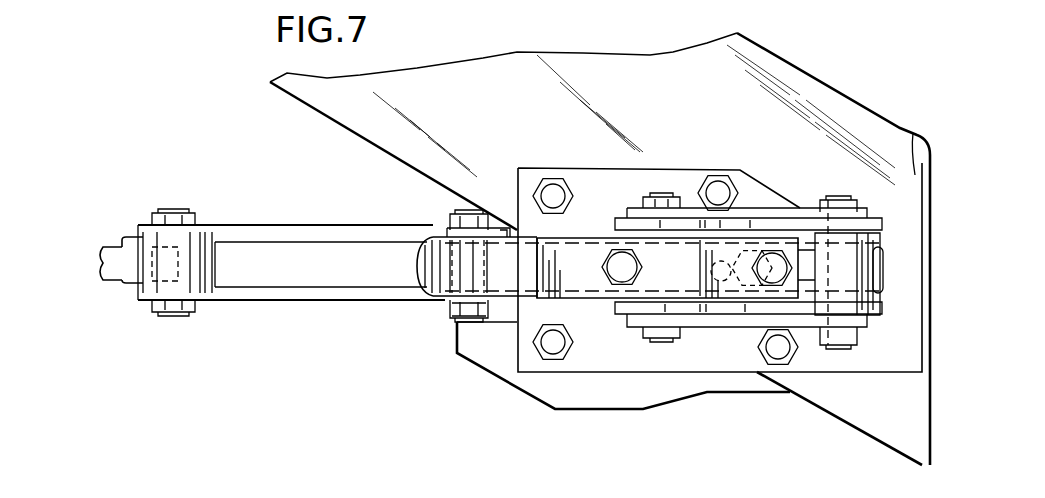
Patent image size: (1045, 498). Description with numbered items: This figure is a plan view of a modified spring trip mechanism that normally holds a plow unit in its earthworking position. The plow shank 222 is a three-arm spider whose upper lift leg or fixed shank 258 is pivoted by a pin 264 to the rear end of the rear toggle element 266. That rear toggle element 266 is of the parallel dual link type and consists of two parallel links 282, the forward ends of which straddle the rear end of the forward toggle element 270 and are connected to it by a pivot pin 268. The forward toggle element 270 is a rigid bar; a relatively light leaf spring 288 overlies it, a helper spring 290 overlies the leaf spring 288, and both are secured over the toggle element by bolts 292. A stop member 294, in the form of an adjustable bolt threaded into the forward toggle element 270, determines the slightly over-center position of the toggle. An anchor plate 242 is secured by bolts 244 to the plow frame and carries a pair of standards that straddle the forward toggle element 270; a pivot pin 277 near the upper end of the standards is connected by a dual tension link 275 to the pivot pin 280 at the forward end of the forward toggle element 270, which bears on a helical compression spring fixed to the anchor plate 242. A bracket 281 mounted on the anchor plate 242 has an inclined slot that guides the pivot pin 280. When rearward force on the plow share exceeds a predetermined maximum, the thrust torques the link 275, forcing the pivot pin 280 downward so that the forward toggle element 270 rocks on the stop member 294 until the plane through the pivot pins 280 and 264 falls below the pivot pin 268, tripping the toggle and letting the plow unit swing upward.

The plow shank 222 is at (106, 283).
The anchor plate 242 is at (642, 357).
The bolts 244 is at (550, 193).
The upper lift leg or fixed shank 258 is at (110, 250).
The pin 264 is at (172, 212).
The rear toggle element 266 is at (306, 222).
The pivot pin 268 is at (470, 320).
The forward toggle element 270 is at (882, 268).
The dual tension link 275 is at (768, 212).
The pivot pin 277 is at (655, 195).
The pivot pin 280 is at (843, 197).
The bracket 281 is at (913, 133).
The parallel links 282 is at (257, 232).
The leaf spring 288 is at (433, 265).
The helper spring 290 is at (578, 272).
The bolts 292 is at (613, 255).
The stop member 294 is at (733, 290).